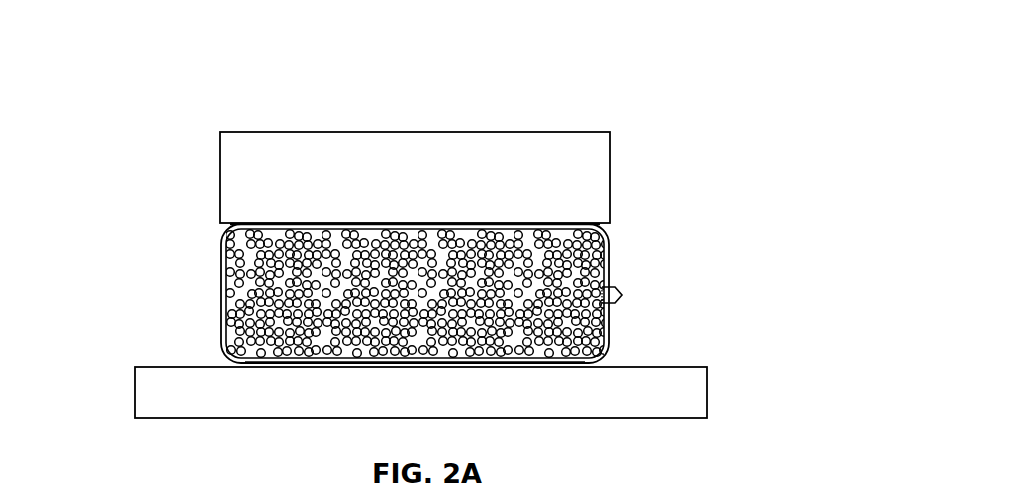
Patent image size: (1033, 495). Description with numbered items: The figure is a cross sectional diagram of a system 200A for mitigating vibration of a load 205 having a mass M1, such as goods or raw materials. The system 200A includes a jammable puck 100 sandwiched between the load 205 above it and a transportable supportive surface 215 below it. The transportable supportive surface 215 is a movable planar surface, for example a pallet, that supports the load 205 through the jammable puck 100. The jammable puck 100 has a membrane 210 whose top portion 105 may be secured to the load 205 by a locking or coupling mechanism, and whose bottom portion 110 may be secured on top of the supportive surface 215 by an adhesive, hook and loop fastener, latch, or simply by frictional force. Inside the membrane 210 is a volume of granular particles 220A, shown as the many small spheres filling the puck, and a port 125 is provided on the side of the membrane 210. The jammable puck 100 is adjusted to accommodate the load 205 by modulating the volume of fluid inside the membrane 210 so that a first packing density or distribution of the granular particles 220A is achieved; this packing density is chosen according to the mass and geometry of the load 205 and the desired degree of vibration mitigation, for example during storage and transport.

The system 200A is at (712, 63).
The load 205 is at (220, 176).
The membrane 210 is at (224, 238).
The top portion 105 is at (556, 226).
The jammable puck 100 is at (213, 272).
The granular particles 220A is at (577, 262).
The port 125 is at (622, 291).
The transportable supportive surface 215 is at (135, 392).
The bottom portion 110 is at (487, 362).